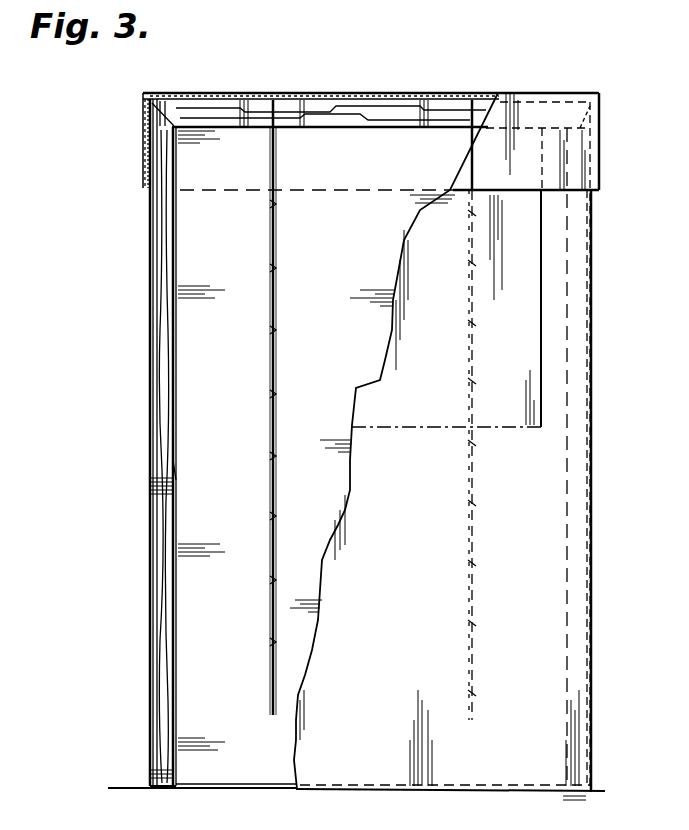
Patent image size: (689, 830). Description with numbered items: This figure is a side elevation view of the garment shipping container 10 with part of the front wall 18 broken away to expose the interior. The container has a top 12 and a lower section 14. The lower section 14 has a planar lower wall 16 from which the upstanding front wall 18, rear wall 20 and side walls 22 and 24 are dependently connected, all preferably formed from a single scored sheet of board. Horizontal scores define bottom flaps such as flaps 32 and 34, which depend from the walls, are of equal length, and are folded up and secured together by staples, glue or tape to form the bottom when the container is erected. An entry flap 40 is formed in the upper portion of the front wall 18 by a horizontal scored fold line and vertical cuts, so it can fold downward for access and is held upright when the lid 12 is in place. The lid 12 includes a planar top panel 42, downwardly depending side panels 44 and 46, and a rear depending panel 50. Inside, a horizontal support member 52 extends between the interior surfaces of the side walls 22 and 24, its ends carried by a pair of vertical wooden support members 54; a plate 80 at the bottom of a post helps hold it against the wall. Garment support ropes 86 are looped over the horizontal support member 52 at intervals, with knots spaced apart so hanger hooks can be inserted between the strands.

The wall panel assembly 10 is at (527, 800).
The top section 12 is at (450, 93).
The lower section 14 is at (588, 246).
The lower wall 16 is at (345, 792).
The front wall 18 is at (530, 702).
The rear wall 20 is at (235, 702).
The side wall 22 is at (593, 492).
The side wall 24 is at (150, 362).
The flap 32 is at (225, 788).
The flap 34 is at (225, 791).
The entry flap 40 is at (440, 362).
The top panel 42 is at (318, 93).
The side panel 44 is at (600, 128).
The side panel 46 is at (148, 142).
The rear depending panel 50 is at (213, 192).
The horizontal support member 52 is at (352, 128).
The vertical support member 54 is at (176, 469).
The bottom cap 80 is at (148, 742).
The garment support rope 86 is at (275, 350).